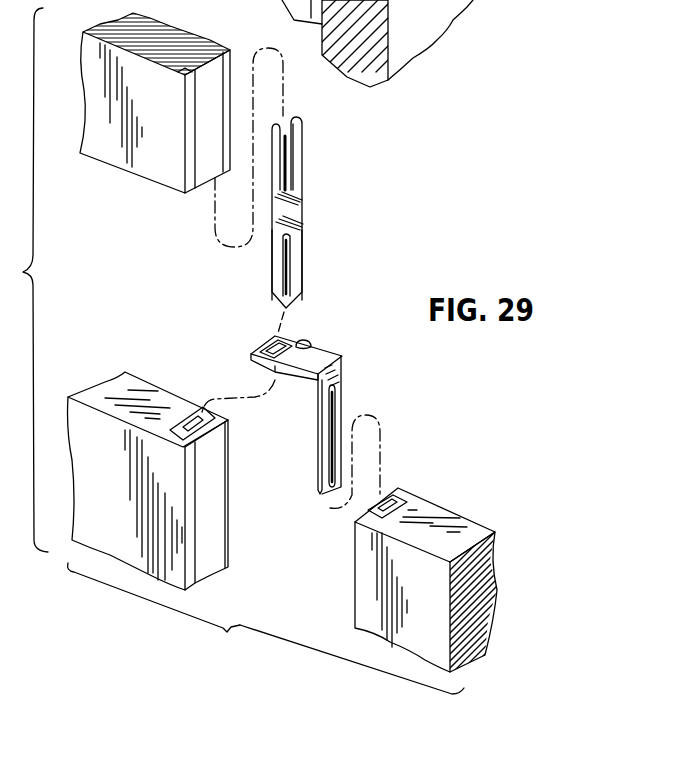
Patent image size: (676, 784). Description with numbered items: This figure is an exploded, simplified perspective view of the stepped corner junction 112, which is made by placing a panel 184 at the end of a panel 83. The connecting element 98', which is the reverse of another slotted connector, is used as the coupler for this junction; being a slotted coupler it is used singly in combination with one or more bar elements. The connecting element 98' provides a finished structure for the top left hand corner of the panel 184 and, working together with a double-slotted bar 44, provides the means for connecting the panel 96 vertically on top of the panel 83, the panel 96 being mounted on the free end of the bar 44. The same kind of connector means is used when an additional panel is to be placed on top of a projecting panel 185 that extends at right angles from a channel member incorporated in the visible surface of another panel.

The double-slotted bar 44 is at (302, 212).
The panel 83 is at (153, 390).
The panel 96 is at (145, 163).
The connecting element 98' is at (352, 425).
The stepped corner junction 112 is at (338, 333).
The panel 184 is at (430, 513).
The projecting panel 185 is at (472, 2).